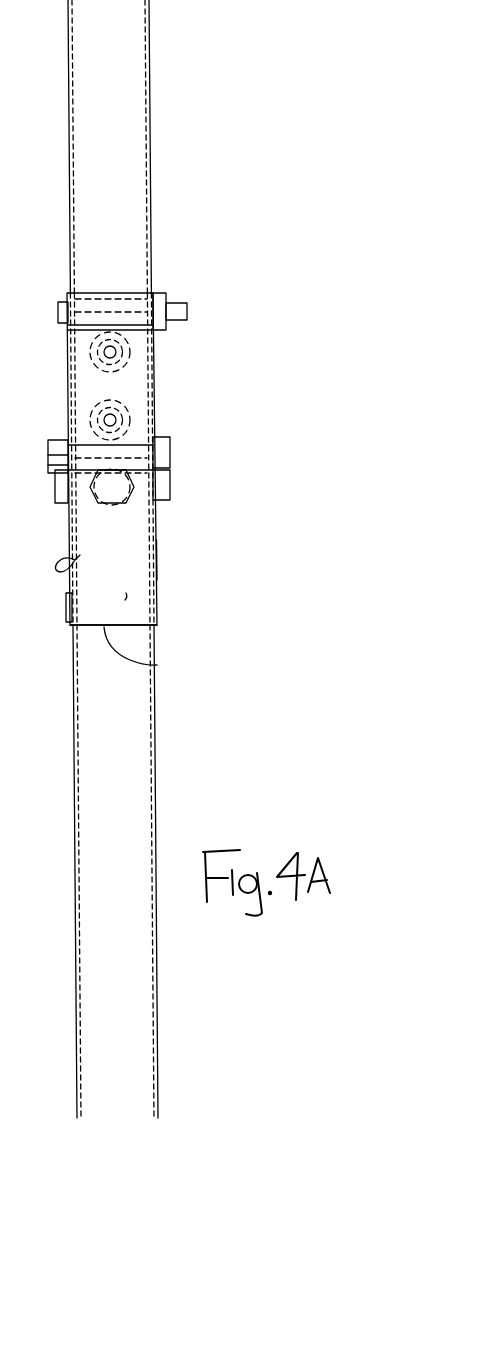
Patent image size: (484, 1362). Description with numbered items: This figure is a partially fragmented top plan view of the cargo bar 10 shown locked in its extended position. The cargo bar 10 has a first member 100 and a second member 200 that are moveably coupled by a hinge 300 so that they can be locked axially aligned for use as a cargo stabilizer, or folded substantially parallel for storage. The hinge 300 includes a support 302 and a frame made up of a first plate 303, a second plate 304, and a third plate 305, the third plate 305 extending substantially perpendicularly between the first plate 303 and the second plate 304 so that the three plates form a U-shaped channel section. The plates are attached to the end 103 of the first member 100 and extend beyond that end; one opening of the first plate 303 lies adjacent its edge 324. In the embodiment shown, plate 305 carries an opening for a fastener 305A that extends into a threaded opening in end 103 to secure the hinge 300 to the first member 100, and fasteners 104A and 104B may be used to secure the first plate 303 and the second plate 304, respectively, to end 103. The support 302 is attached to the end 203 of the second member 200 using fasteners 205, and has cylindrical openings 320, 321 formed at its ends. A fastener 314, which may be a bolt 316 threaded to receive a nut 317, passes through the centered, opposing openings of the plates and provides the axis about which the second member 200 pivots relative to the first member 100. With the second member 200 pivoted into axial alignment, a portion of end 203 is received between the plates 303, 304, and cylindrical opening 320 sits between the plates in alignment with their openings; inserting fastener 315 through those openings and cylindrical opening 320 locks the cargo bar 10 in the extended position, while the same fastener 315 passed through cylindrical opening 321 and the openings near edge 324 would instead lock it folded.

The cargo bar 10 is at (258, 158).
The second member 200 is at (150, 92).
The first member 100 is at (157, 771).
The hinge 300 is at (165, 527).
The end of second member 203 is at (146, 292).
The cylindrical opening 321 is at (125, 297).
The fastener 315 is at (168, 325).
The fasteners 205 is at (136, 356).
The support 302 is at (133, 390).
The cylindrical opening 320 is at (128, 420).
The fastener 314 is at (168, 438).
The bolt 316 is at (55, 440).
The nut 317 is at (165, 453).
The fasteners 104A is at (170, 497).
The fasteners 104B is at (63, 493).
The fastener 305A is at (115, 503).
The second plate 304 is at (80, 556).
The first plate 303 is at (158, 556).
The third plate 305 is at (152, 588).
The end of first member 103 is at (157, 630).
The edge of first plate 324 is at (157, 665).